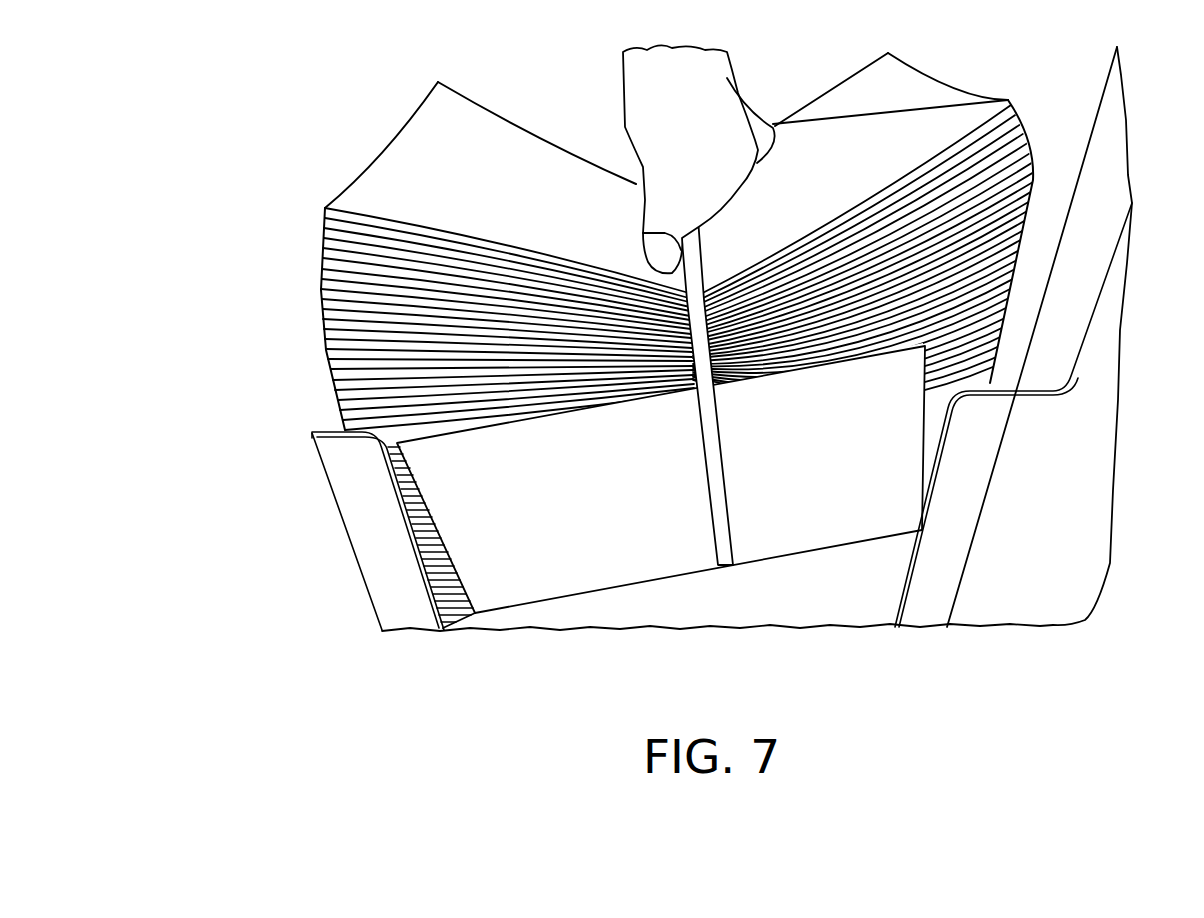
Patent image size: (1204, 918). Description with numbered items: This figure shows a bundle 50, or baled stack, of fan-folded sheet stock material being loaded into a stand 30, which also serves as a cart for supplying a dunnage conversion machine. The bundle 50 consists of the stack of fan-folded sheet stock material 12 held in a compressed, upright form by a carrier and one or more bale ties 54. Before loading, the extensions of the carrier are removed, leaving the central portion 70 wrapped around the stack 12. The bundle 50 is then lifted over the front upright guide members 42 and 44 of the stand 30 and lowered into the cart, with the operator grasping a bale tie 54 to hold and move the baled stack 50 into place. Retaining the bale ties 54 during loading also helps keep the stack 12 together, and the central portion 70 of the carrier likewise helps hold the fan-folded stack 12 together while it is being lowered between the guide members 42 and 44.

The stack of fan-folded sheet stock material 12 is at (398, 183).
The stand 30 is at (1075, 312).
The front upright guide member 42 is at (380, 568).
The front upright guide member 44 is at (952, 520).
The bundle 50 is at (300, 283).
The bale tie 54 is at (723, 530).
The central portion 70 is at (522, 567).